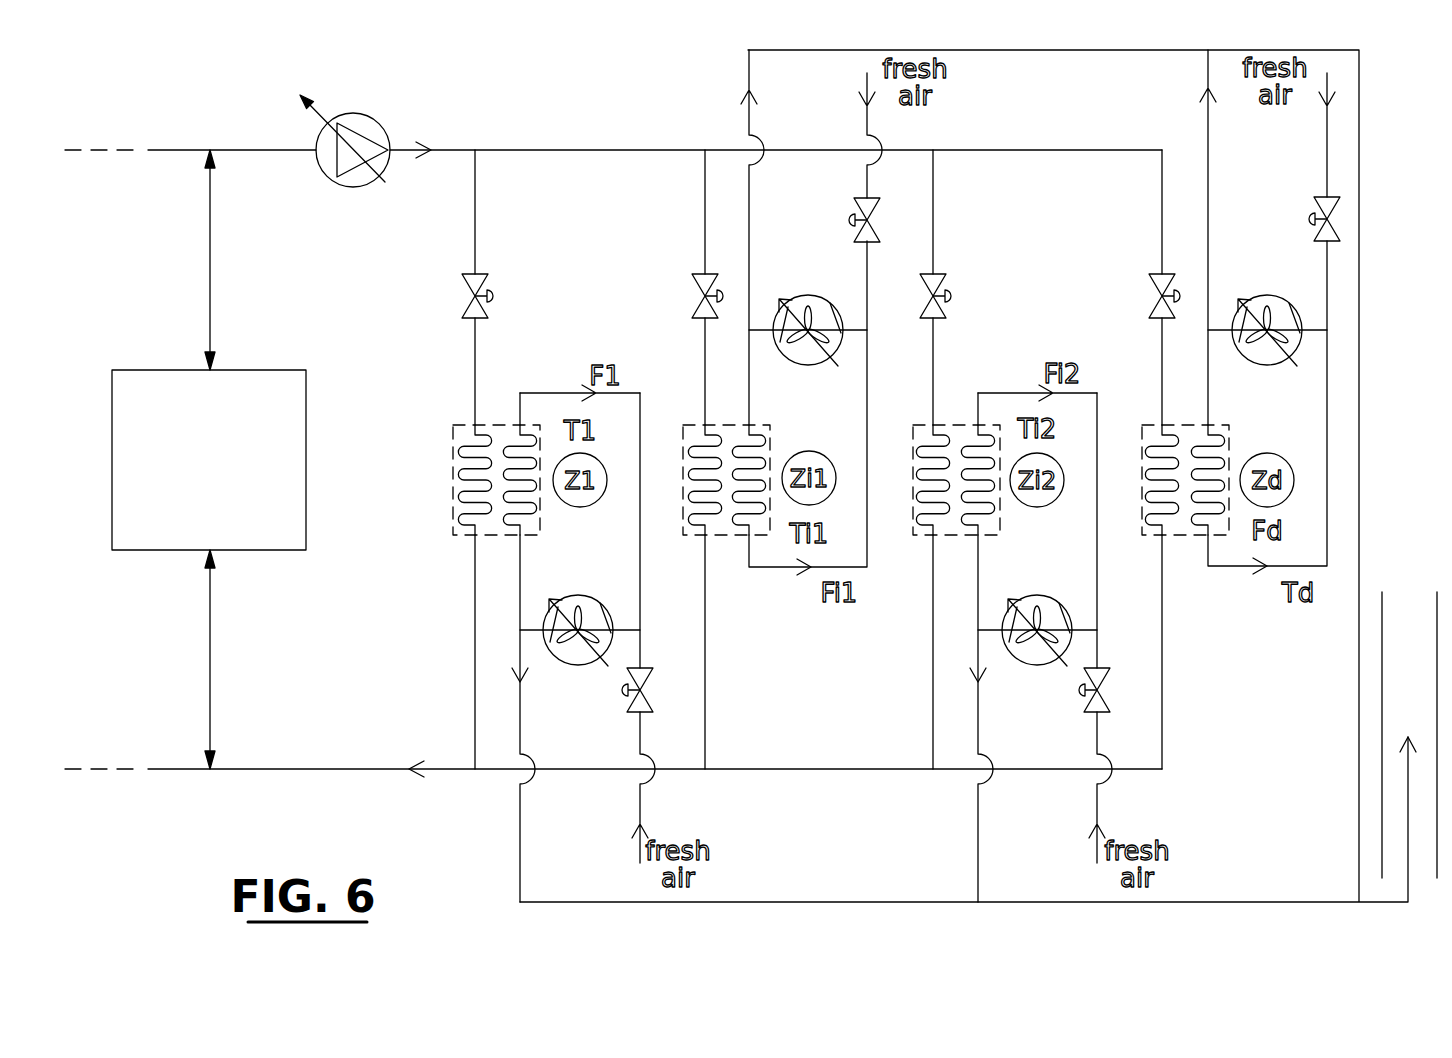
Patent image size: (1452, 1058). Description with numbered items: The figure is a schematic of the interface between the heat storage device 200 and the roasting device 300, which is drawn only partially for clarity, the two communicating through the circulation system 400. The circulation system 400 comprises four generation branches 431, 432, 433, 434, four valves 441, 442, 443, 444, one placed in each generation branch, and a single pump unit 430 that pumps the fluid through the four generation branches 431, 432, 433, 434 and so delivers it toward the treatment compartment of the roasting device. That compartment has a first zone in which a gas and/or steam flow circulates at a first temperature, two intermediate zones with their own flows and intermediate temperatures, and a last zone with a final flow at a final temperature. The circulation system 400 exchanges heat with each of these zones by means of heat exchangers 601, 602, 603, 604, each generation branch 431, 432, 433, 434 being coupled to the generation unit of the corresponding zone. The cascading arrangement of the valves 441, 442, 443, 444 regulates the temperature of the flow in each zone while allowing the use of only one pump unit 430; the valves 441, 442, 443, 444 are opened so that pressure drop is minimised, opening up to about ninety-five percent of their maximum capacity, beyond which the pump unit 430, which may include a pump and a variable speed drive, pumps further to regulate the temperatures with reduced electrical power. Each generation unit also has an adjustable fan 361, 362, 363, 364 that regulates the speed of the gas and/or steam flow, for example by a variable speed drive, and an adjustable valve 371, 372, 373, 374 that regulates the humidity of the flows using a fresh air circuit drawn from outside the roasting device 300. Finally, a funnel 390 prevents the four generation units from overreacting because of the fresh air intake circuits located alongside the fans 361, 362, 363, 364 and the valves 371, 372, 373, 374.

The heat storage device 200 is at (140, 370).
The roasting device 300 is at (590, 89).
The circulation system 400 is at (245, 150).
The pump unit 430 is at (367, 116).
The generation branch 431 is at (475, 190).
The generation branch 432 is at (705, 210).
The generation branch 433 is at (933, 185).
The generation branch 434 is at (1163, 183).
The valve 441 is at (487, 315).
The valve 442 is at (693, 288).
The valve 443 is at (945, 316).
The valve 444 is at (1160, 290).
The adjustable fan 361 is at (574, 600).
The adjustable fan 362 is at (792, 352).
The adjustable fan 363 is at (1034, 600).
The adjustable fan 364 is at (1250, 352).
The adjustable valve 371 is at (633, 712).
The adjustable valve 372 is at (855, 204).
The adjustable valve 373 is at (1091, 712).
The adjustable valve 374 is at (1317, 237).
The heat exchanger 601 is at (462, 432).
The heat exchanger 602 is at (725, 537).
The heat exchanger 603 is at (923, 537).
The heat exchanger 604 is at (1185, 537).
The funnel 390 is at (1402, 616).